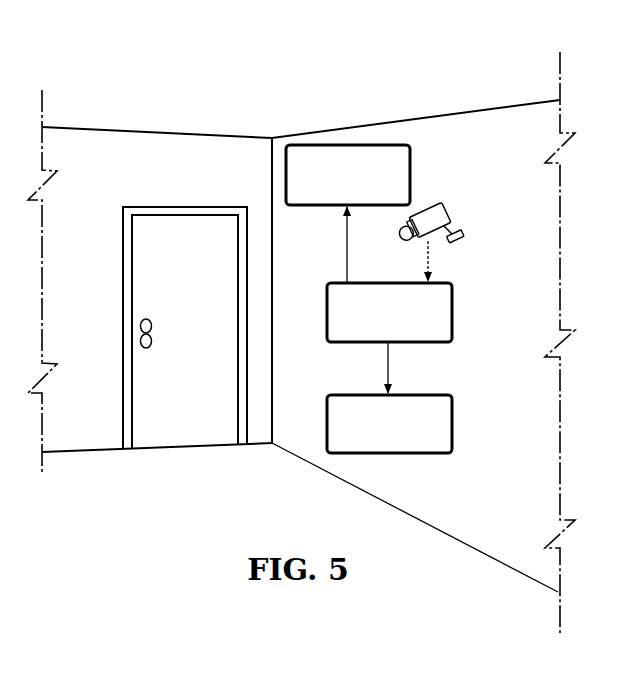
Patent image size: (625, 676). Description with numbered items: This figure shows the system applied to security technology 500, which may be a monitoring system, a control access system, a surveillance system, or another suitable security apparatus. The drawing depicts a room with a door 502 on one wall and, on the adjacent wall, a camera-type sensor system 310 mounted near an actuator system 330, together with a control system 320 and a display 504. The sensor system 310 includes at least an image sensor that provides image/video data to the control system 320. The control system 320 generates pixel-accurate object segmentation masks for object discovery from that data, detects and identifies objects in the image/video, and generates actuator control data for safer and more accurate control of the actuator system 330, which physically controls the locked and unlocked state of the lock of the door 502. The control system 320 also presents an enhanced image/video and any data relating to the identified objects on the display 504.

The security technology 500 is at (444, 82).
The door 502 is at (185, 328).
The sensor system 310 is at (452, 214).
The control system 320 is at (453, 313).
The actuator system 330 is at (411, 173).
The display 504 is at (453, 430).